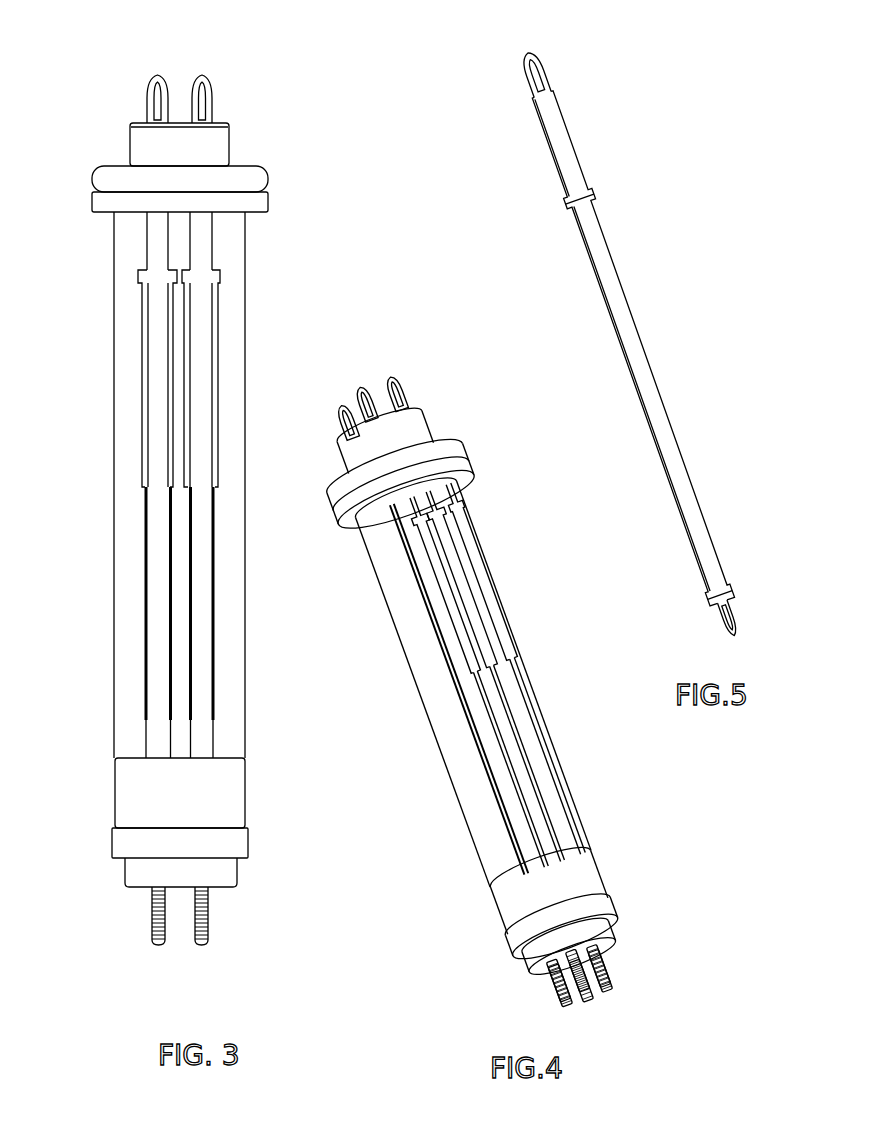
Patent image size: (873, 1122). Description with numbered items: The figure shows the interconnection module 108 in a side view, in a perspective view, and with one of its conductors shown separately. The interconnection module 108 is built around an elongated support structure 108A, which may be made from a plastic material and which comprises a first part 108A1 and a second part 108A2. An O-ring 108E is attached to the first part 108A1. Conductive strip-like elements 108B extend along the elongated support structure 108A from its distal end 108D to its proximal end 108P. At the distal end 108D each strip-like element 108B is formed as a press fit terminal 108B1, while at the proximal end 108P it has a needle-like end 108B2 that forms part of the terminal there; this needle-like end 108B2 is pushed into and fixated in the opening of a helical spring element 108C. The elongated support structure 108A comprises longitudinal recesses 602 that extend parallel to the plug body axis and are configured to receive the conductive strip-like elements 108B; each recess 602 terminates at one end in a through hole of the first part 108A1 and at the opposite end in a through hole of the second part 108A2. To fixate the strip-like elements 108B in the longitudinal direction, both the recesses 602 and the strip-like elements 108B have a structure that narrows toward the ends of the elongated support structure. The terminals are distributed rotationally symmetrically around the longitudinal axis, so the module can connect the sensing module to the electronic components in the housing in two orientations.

In FIG. 3, the interconnection module 108 is at (177, 495).
In FIG. 3, the elongated support structure 108A is at (164, 578).
In FIG. 3, the first part 108A1 is at (132, 500).
In FIG. 4, the first part 108A1 is at (440, 712).
In FIG. 3, the second part 108A2 is at (227, 798).
In FIG. 4, the second part 108A2 is at (585, 890).
In FIG. 3, the conductive strip-like element 108B is at (229, 485).
In FIG. 4, the conductive strip-like element 108B is at (505, 677).
In FIG. 5, the conductive strip-like element 108B is at (658, 333).
In FIG. 3, the press fit terminal 108B1 is at (208, 93).
In FIG. 4, the press fit terminal 108B1 is at (400, 386).
In FIG. 5, the press fit terminal 108B1 is at (545, 72).
In FIG. 5, the needle-like end 108B2 is at (728, 616).
In FIG. 3, the helical spring element 108C is at (150, 912).
In FIG. 4, the helical spring element 108C is at (547, 1007).
In FIG. 3, the distal end 108D is at (122, 149).
In FIG. 3, the O-ring 108E is at (123, 181).
In FIG. 4, the O-ring 108E is at (436, 440).
In FIG. 3, the proximal end 108P is at (93, 837).
In FIG. 3, the longitudinal recess 602 is at (162, 575).
In FIG. 4, the longitudinal recess 602 is at (513, 815).